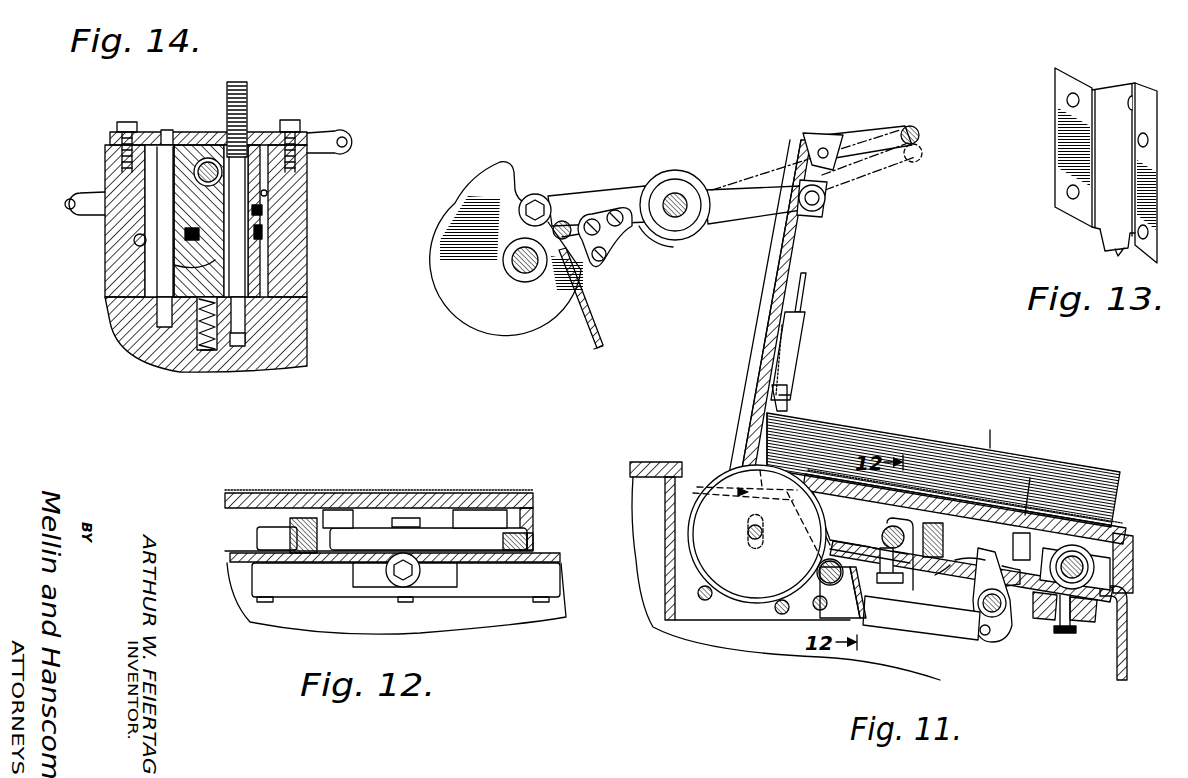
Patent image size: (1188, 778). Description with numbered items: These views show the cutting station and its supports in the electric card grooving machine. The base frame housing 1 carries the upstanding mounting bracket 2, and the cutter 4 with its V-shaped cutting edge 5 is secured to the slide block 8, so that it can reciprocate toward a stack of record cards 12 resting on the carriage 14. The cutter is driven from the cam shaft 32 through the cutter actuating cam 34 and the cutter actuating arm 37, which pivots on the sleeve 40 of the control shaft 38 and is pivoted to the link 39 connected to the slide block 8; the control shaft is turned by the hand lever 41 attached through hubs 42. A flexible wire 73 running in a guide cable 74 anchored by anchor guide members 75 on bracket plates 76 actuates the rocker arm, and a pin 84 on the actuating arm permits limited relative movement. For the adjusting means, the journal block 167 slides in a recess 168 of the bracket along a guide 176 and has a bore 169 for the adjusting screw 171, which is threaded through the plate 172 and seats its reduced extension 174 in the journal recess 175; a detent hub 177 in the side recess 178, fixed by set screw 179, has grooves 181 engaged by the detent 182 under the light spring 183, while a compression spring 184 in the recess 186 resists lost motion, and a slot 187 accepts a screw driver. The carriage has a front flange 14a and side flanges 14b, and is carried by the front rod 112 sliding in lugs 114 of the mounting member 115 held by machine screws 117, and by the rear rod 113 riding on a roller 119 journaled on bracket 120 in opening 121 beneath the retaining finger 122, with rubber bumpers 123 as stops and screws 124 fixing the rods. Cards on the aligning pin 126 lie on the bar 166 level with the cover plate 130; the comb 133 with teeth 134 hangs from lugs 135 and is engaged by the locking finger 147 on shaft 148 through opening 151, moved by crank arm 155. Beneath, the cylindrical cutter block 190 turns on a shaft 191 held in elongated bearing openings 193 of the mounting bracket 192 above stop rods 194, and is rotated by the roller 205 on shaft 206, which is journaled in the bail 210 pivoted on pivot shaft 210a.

In FIG. 11, the base frame housing 1 is at (1130, 628).
In FIG. 14, the mounting bracket 2 is at (293, 250).
In FIG. 13, the cutter 4 is at (1113, 92).
In FIG. 11, the cutter 4 is at (804, 335).
In FIG. 13, the V-shaped cutting edge 5 is at (1115, 250).
In FIG. 11, the V-shaped cutting edge 5 is at (789, 390).
In FIG. 11, the slide block 8 is at (793, 253).
In FIG. 11, the record cards 12 is at (1086, 472).
In FIG. 12, the carriage 14 is at (399, 493).
In FIG. 11, the carriage 14 is at (1140, 531).
In FIG. 11, the front flange 14a is at (1128, 566).
In FIG. 12, the side flanges 14b is at (537, 518).
In FIG. 11, the side flanges 14b is at (1130, 585).
In FIG. 11, the cam shaft 32 is at (523, 276).
In FIG. 11, the cutter actuating cam 34 is at (452, 293).
In FIG. 14, the cutter actuating arm 37 is at (330, 132).
In FIG. 11, the cutter actuating arm 37 is at (596, 190).
In FIG. 14, the control shaft 38 is at (187, 145).
In FIG. 11, the control shaft 38 is at (691, 190).
In FIG. 11, the link 39 is at (826, 196).
In FIG. 14, the sleeve 40 is at (218, 184).
In FIG. 11, the sleeve 40 is at (670, 198).
In FIG. 11, the hand lever 41 is at (884, 131).
In FIG. 11, the hubs 42 is at (696, 242).
In FIG. 11, the flexible wire 73 is at (601, 347).
In FIG. 11, the guide cable 74 is at (601, 318).
In FIG. 11, the anchor guide members 75 is at (561, 242).
In FIG. 11, the bracket plates 76 is at (620, 244).
In FIG. 14, the pin 84 is at (134, 241).
In FIG. 11, the pin 84 is at (605, 257).
In FIG. 12, the front carriage supporting rod 112 is at (270, 527).
In FIG. 11, the front carriage supporting rod 112 is at (1090, 563).
In FIG. 12, the back carriage supporting rod 113 is at (425, 529).
In FIG. 11, the back carriage supporting rod 113 is at (882, 532).
In FIG. 12, the lugs 114 is at (325, 511).
In FIG. 12, the mounting member 115 is at (320, 585).
In FIG. 11, the mounting member 115 is at (1090, 623).
In FIG. 12, the machine screws 117 is at (265, 603).
In FIG. 11, the machine screws 117 is at (1063, 634).
In FIG. 12, the roller 119 is at (410, 586).
In FIG. 11, the roller 119 is at (893, 592).
In FIG. 12, the bracket 120 is at (457, 578).
In FIG. 11, the bracket 120 is at (902, 576).
In FIG. 11, the opening 121 is at (875, 562).
In FIG. 12, the finger 122 is at (392, 522).
In FIG. 11, the finger 122 is at (892, 522).
In FIG. 12, the rubber bumpers 123 is at (300, 519).
In FIG. 11, the rubber bumpers 123 is at (945, 536).
In FIG. 12, the screws 124 is at (533, 540).
In FIG. 11, the aligning pin 126 is at (995, 440).
In FIG. 12, the cover plate 130 is at (366, 495).
In FIG. 11, the cover plate 130 is at (1124, 524).
In FIG. 11, the aligning comb 133 is at (1008, 588).
In FIG. 11, the teeth 134 is at (1003, 558).
In FIG. 11, the lugs 135 is at (1027, 515).
In FIG. 11, the locking finger 147 is at (980, 558).
In FIG. 11, the shaft 148 is at (976, 630).
In FIG. 11, the opening 151 is at (937, 580).
In FIG. 11, the crank arm 155 is at (1004, 626).
In FIG. 11, the bar 166 is at (805, 470).
In FIG. 14, the journal block 167 is at (183, 267).
In FIG. 14, the recess 168 is at (267, 193).
In FIG. 14, the bore 169 is at (232, 147).
In FIG. 14, the adjusting screw 171 is at (248, 98).
In FIG. 14, the plate 172 is at (157, 132).
In FIG. 14, the reduced extension 174 is at (240, 317).
In FIG. 14, the journal recess 175 is at (293, 170).
In FIG. 14, the guide 176 is at (160, 257).
In FIG. 14, the detent hub 177 is at (265, 250).
In FIG. 14, the recess 178 is at (205, 200).
In FIG. 14, the set screw 179 is at (263, 210).
In FIG. 14, the grooves 181 is at (263, 232).
In FIG. 14, the detent 182 is at (157, 280).
In FIG. 14, the light spring 183 is at (187, 233).
In FIG. 14, the compression spring 184 is at (193, 349).
In FIG. 14, the recess 186 is at (208, 351).
In FIG. 14, the slot 187 is at (238, 82).
In FIG. 11, the cutter block 190 is at (710, 495).
In FIG. 11, the shaft 191 is at (747, 531).
In FIG. 11, the mounting bracket 192 is at (665, 600).
In FIG. 11, the elongated bearing openings 193 is at (747, 545).
In FIG. 11, the stop rods 194 is at (774, 609).
In FIG. 11, the roller 205 is at (818, 572).
In FIG. 11, the shaft 206 is at (820, 564).
In FIG. 11, the bail 210 is at (860, 620).
In FIG. 11, the pivot shaft 210a is at (818, 608).